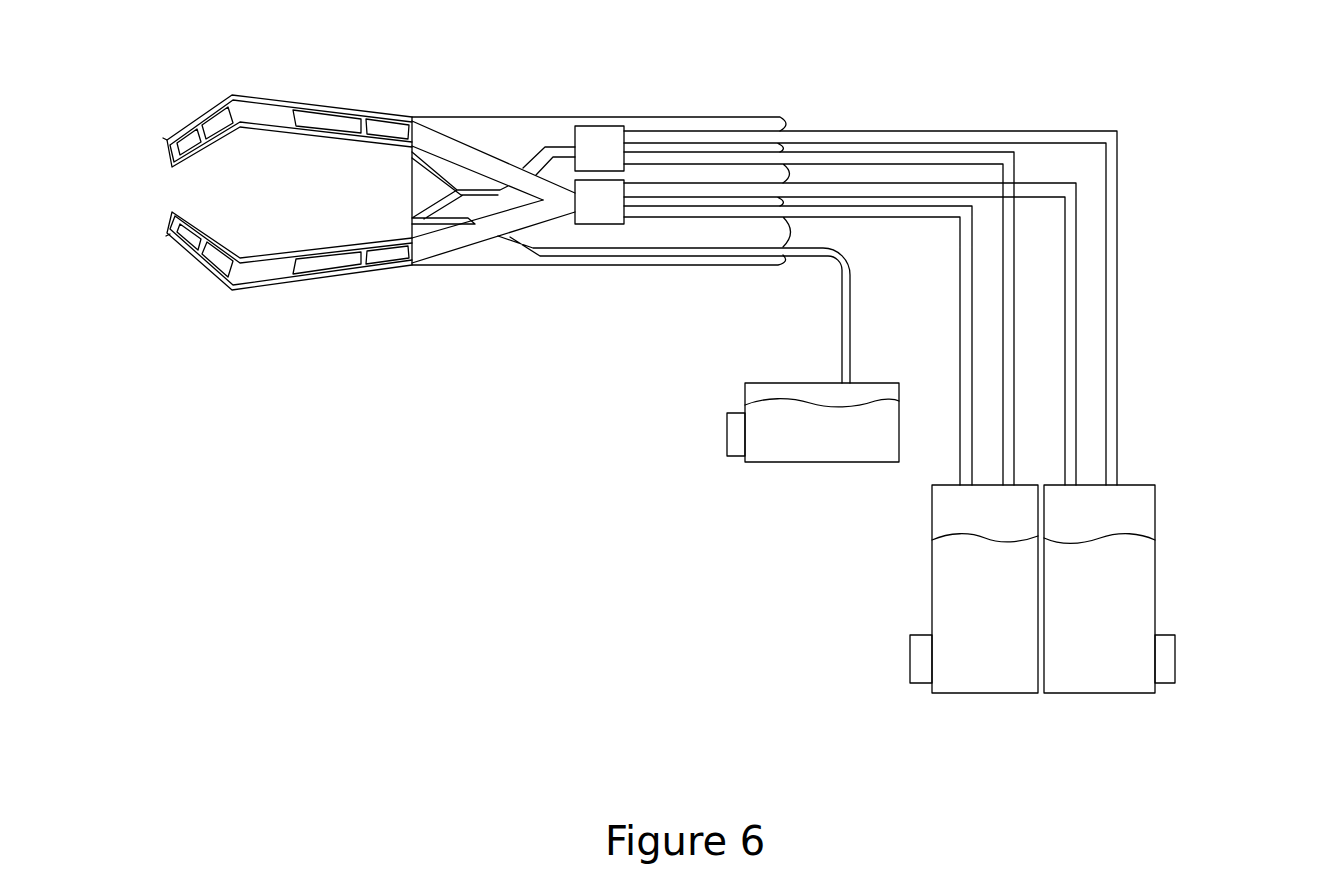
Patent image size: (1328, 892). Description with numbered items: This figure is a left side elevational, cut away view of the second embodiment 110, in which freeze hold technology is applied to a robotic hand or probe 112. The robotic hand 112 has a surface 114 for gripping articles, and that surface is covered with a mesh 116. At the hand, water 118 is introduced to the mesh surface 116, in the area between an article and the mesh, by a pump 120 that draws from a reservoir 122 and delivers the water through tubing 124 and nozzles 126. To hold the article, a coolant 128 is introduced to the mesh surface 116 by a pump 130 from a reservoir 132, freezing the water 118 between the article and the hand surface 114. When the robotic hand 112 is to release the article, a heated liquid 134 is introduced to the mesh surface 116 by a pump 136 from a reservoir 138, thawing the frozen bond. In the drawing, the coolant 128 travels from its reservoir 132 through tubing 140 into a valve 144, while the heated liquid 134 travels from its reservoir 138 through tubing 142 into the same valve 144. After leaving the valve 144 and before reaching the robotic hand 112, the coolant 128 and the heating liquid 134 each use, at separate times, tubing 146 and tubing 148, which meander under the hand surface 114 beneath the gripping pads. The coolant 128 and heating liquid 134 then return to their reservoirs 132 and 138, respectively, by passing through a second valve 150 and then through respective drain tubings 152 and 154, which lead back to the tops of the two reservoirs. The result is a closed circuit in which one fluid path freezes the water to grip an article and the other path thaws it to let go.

The second embodiment 110 is at (717, 80).
The robotic hand or probe 112 is at (323, 89).
The surface 114 is at (331, 247).
The mesh 116 is at (230, 238).
The water 118 is at (763, 447).
The pump 120 is at (727, 435).
The reservoir 122 is at (745, 388).
The tubing 124 is at (600, 253).
The nozzles 126 is at (194, 232).
The coolant 128 is at (968, 638).
The pump 130 is at (910, 664).
The reservoir 132 is at (932, 555).
The heated liquid 134 is at (1102, 643).
The pump 136 is at (1177, 655).
The reservoir 138 is at (1155, 553).
The tubing 140 is at (877, 215).
The tubing 142 is at (1031, 185).
The valve 144 is at (628, 213).
The tubing 146 is at (458, 237).
The tubing 148 is at (468, 148).
The valve 150 is at (598, 143).
The drain tubing 152 is at (1000, 328).
The drain tubing 154 is at (1118, 240).